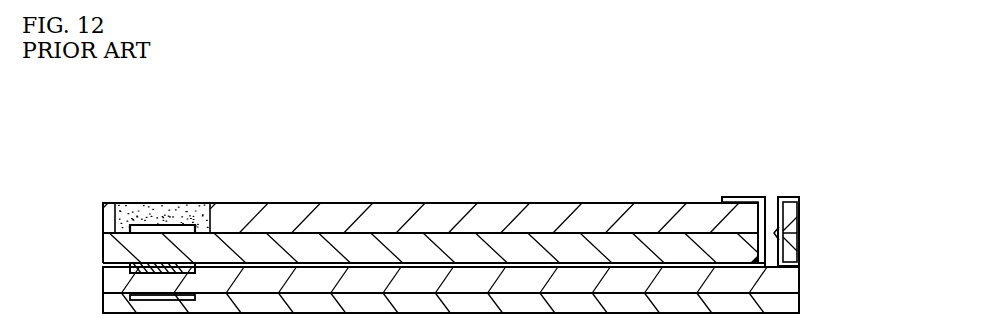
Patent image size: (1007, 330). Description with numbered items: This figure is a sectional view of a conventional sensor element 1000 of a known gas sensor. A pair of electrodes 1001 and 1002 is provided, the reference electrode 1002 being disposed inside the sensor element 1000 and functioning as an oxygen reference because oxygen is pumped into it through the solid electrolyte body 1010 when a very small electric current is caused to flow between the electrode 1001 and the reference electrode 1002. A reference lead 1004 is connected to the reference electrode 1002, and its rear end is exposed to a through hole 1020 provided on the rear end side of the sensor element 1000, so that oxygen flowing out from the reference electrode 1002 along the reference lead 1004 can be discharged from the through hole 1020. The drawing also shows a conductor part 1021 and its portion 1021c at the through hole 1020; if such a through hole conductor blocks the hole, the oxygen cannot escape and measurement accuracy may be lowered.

The sensor element 1000 is at (582, 141).
The electrode 1001 is at (185, 216).
The reference electrode 1002 is at (130, 267).
The reference lead 1004 is at (278, 263).
The solid electrolyte body 1010 is at (107, 243).
The through hole 1020 is at (773, 198).
The lead terminal 1021 is at (742, 196).
The bent portion of lead terminal 1021c is at (783, 233).